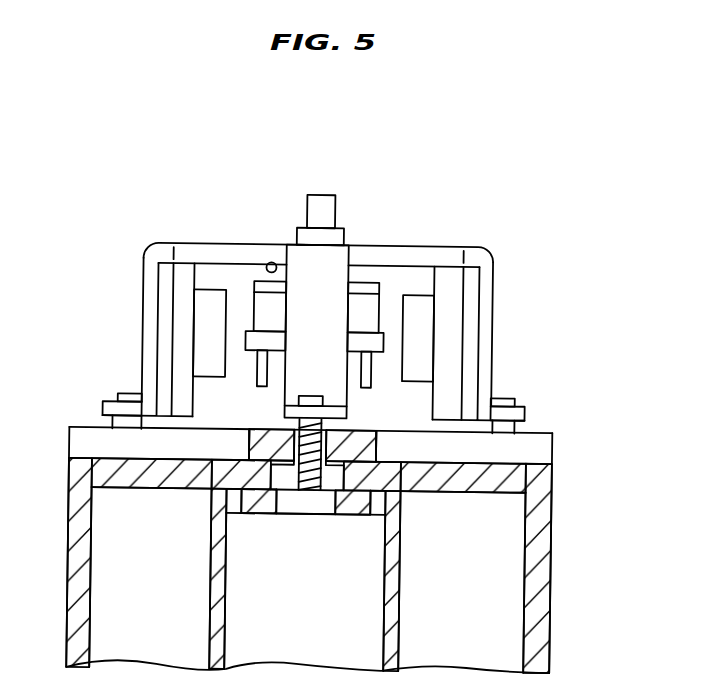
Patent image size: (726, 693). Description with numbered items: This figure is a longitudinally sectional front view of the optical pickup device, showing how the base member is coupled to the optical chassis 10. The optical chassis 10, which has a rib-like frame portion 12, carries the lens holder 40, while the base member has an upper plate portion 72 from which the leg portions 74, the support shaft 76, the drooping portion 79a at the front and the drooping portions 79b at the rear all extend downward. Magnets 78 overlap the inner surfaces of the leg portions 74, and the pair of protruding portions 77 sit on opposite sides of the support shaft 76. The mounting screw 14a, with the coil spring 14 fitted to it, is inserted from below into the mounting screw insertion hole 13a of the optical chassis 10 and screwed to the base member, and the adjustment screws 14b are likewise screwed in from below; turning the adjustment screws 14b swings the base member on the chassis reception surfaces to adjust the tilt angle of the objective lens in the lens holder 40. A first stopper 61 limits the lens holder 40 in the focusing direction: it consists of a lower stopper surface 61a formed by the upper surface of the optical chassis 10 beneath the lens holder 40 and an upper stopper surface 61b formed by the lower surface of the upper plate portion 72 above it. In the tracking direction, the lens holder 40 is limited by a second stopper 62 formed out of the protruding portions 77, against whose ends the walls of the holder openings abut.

The optical chassis 10 is at (555, 527).
The rib-like frame portion 12 is at (553, 455).
The mounting screw insertion hole 13a is at (297, 431).
The coil spring 14 is at (296, 515).
The mounting screw 14a is at (313, 503).
The adjustment screws 14b is at (127, 394).
The lens holder 40 is at (253, 307).
The first stopper 61 is at (312, 445).
The lower stopper surface 61a is at (358, 431).
The upper stopper surface 61b is at (270, 263).
The second stopper 62 is at (314, 341).
The upper plate portion 72 is at (408, 246).
The leg portions 74 is at (182, 315).
The support shaft 76 is at (318, 200).
The protruding portions 77 is at (373, 373).
The magnets 78 is at (208, 291).
The drooping portion 79a is at (327, 277).
The drooping portions 79b is at (142, 285).